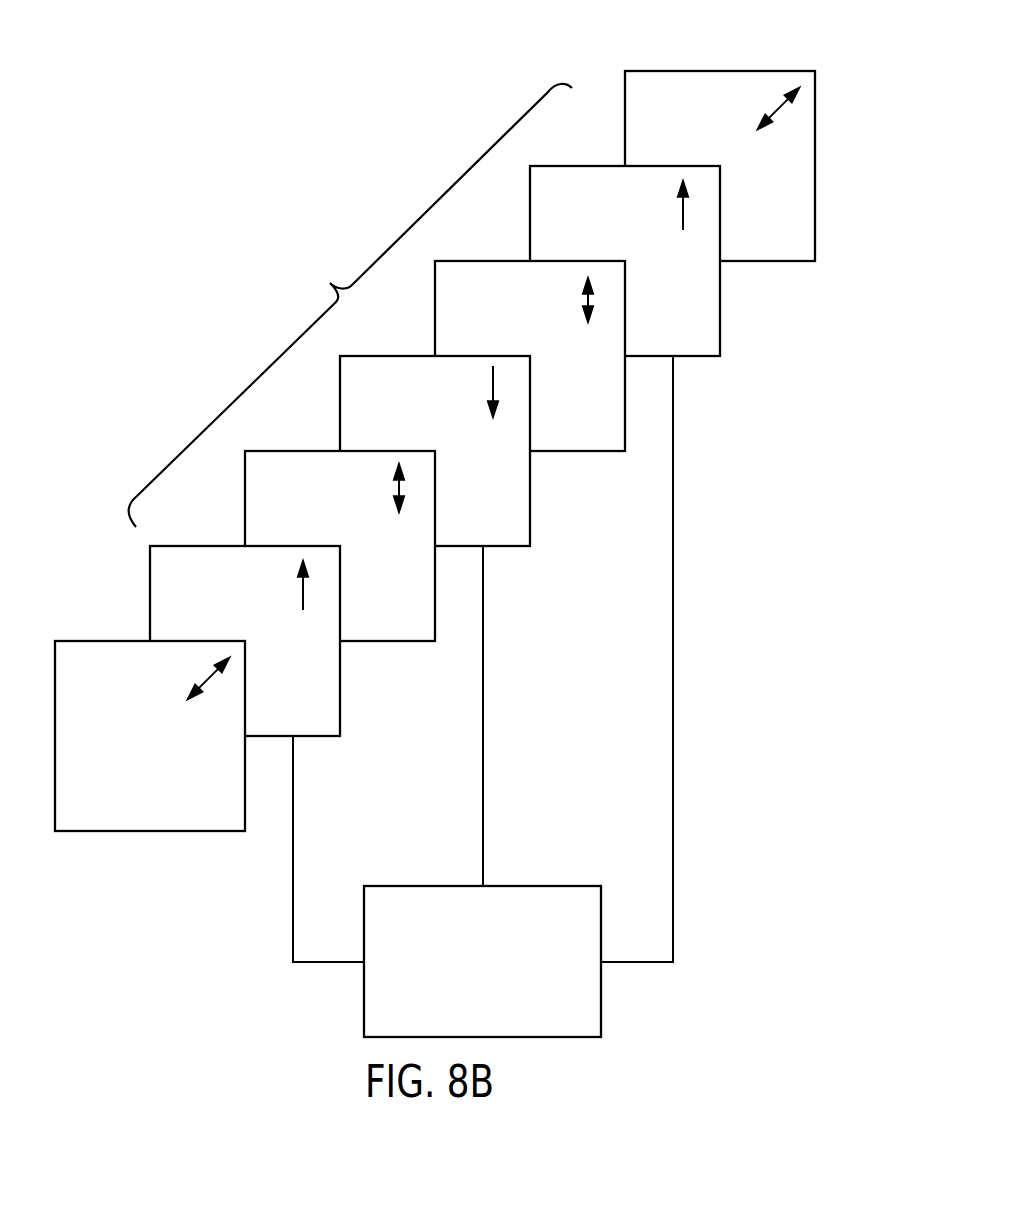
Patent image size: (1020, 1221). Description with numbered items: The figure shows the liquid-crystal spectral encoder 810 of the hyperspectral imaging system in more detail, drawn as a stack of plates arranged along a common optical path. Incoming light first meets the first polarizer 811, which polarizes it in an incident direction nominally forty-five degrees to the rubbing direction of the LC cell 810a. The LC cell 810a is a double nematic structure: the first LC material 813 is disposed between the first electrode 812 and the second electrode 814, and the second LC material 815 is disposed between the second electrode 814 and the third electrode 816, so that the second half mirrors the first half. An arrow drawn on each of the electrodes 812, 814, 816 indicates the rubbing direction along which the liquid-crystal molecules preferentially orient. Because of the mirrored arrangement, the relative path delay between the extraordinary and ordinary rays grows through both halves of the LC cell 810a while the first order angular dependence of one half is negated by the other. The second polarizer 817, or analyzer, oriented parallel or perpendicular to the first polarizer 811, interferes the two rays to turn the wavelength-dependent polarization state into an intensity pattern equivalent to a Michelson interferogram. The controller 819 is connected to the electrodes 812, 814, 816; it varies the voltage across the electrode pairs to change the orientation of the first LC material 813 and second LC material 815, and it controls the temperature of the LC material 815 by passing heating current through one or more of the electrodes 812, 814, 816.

The LC spectral encoder 810 is at (236, 164).
The LC cell 810a is at (350, 305).
The first polarizer 811 is at (120, 640).
The first electrode 812 is at (214, 545).
The first LC material 813 is at (310, 450).
The second electrode 814 is at (405, 355).
The second LC material 815 is at (500, 260).
The third electrode 816 is at (594, 165).
The second polarizer 817 is at (690, 70).
The controller 819 is at (535, 885).